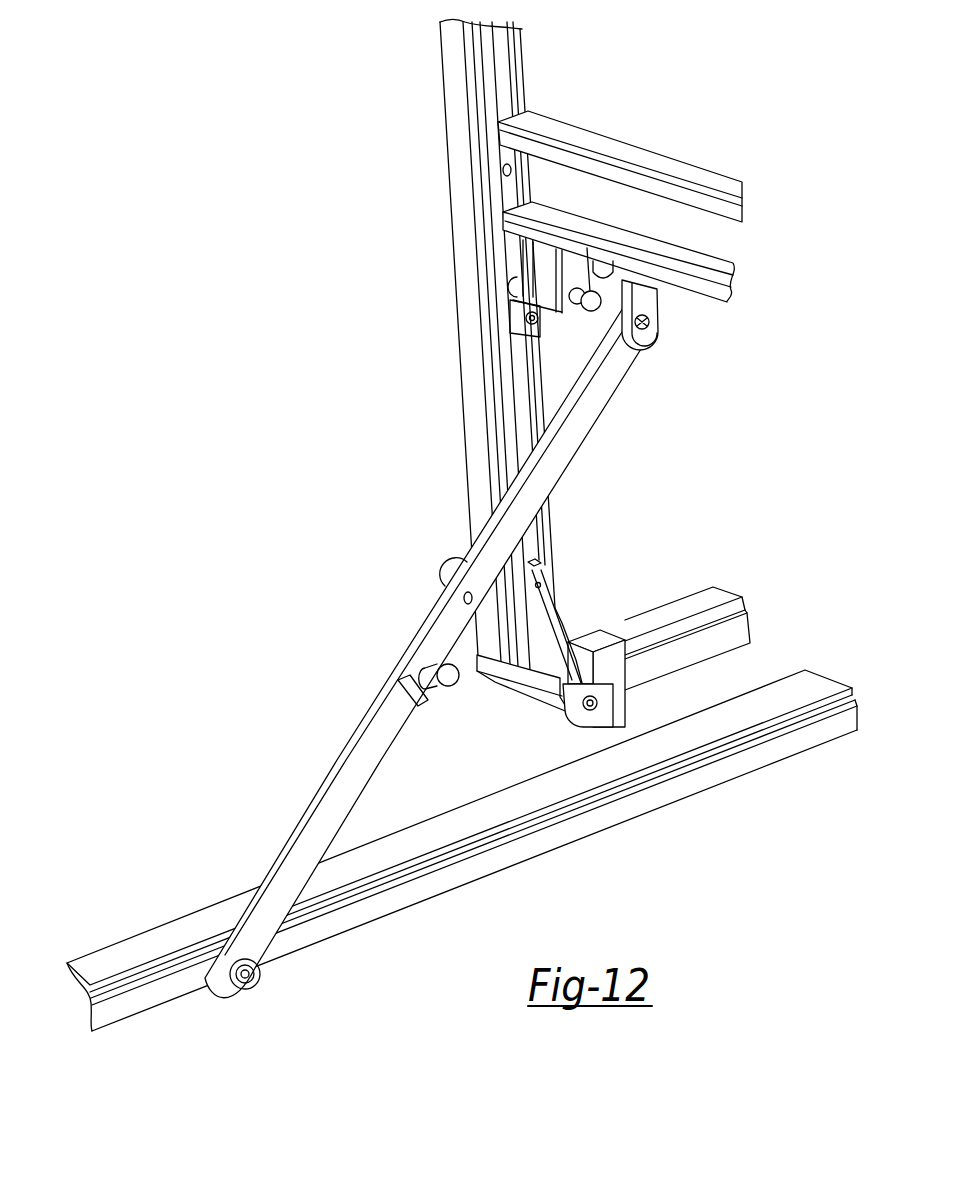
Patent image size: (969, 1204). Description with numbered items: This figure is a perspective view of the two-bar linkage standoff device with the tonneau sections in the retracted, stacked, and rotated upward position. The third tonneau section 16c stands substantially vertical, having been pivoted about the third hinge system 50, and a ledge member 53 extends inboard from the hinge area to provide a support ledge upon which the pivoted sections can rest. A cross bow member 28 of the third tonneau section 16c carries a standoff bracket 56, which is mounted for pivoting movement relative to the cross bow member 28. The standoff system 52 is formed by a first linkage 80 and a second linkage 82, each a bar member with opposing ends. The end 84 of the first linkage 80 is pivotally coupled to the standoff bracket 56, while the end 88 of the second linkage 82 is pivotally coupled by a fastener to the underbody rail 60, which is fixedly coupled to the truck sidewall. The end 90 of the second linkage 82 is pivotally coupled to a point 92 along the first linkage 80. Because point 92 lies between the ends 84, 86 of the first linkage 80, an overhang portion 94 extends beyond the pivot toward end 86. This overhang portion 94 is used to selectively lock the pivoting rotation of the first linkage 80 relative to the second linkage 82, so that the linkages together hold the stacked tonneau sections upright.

The third tonneau section 16c is at (448, 111).
The cross bow member 28 is at (690, 167).
The third hinge system 50 is at (600, 709).
The standoff system 52 is at (189, 548).
The ledge member 53 is at (625, 667).
The standoff bracket 56 is at (645, 303).
The underbody rail 60 is at (190, 930).
The first linkage 80 is at (590, 408).
The second linkage 82 is at (324, 780).
The end of first linkage 84 is at (657, 330).
The end of first linkage 86 is at (440, 647).
The end of second linkage 88 is at (240, 997).
The end of second linkage 90 is at (450, 578).
The point along first linkage 92 is at (472, 602).
The overhang portion 94 is at (430, 688).